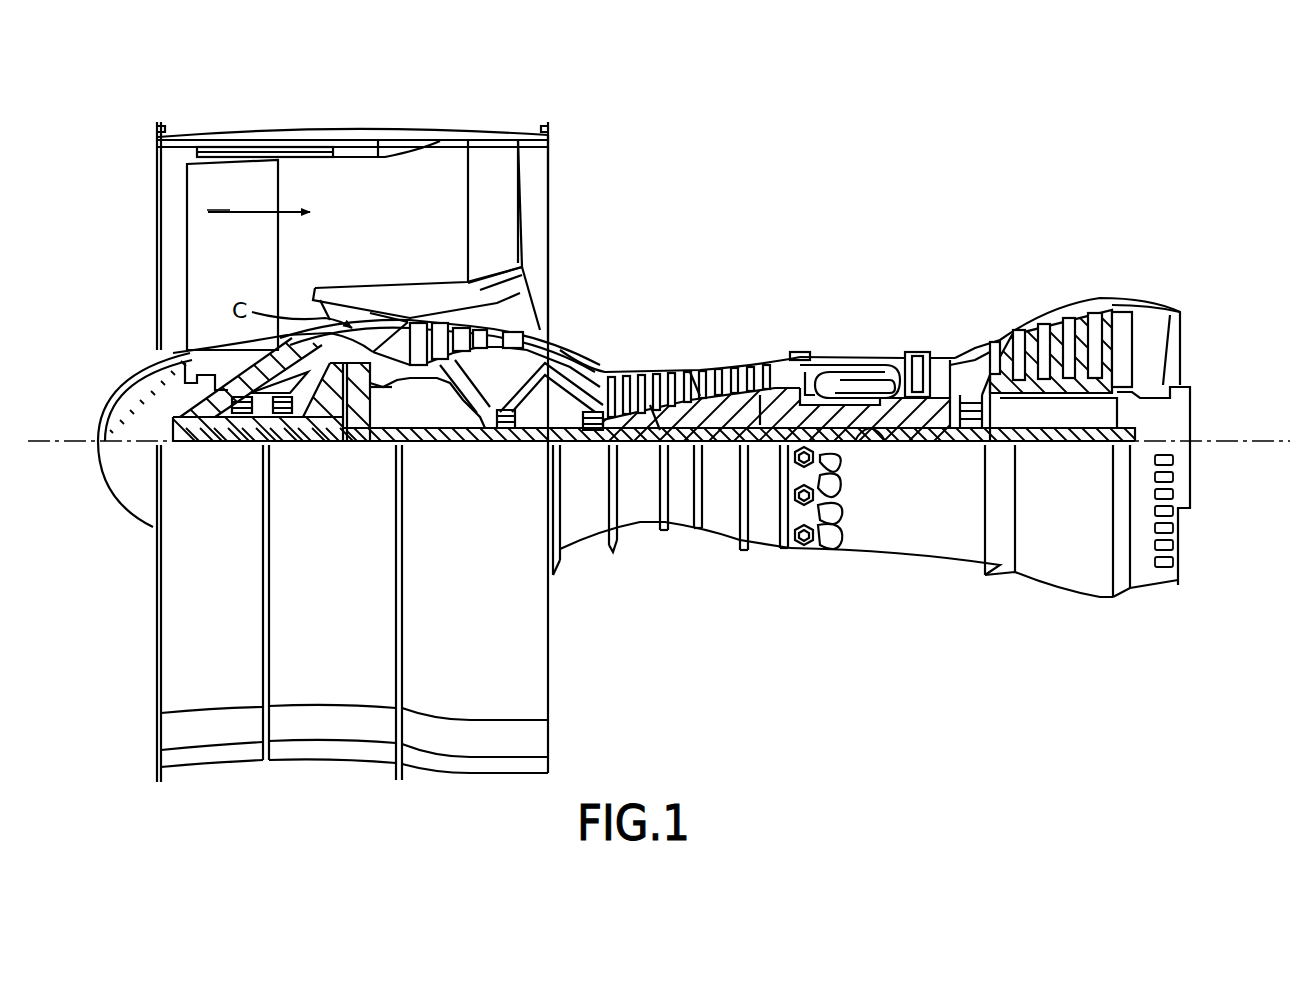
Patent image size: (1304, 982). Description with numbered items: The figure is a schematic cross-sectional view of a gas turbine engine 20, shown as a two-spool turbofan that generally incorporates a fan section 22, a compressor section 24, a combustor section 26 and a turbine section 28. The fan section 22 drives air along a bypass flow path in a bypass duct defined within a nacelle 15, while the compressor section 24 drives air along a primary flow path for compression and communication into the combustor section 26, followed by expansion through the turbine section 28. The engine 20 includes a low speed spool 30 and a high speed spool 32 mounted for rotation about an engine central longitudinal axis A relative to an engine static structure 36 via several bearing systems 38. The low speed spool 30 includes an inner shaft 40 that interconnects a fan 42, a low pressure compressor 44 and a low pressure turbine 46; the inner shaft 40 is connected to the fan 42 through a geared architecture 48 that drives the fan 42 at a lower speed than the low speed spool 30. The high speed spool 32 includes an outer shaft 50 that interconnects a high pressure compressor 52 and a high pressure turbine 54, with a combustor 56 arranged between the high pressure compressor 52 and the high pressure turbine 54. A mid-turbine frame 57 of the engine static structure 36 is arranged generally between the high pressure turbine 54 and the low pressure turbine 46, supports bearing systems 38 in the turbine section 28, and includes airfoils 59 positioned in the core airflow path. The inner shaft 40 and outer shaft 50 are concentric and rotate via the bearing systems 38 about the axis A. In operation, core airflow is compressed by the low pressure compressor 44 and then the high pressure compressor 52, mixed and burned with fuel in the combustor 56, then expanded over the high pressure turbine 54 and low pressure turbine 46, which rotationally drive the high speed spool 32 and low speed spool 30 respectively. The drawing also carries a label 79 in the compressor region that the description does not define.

The nacelle 15 is at (355, 137).
The gas turbine engine 20 is at (882, 155).
The fan section 22 is at (278, 118).
The compressor section 24 is at (600, 352).
The combustor section 26 is at (848, 335).
The turbine section 28 is at (1005, 297).
The low speed spool 30 is at (718, 452).
The high speed spool 32 is at (762, 410).
The engine static structure 36 is at (760, 548).
The bearing systems 38 is at (504, 432).
The inner shaft 40 is at (578, 445).
The fan 42 is at (244, 271).
The low pressure compressor 44 is at (470, 347).
The low pressure turbine 46 is at (1052, 332).
The geared architecture 48 is at (357, 420).
The outer shaft 50 is at (870, 441).
The high pressure compressor 52 is at (690, 410).
The high pressure turbine 54 is at (910, 358).
The combustor 56 is at (848, 385).
The mid-turbine frame 57 is at (968, 335).
The airfoils 59 is at (960, 372).
The compressor stage 79 is at (700, 372).
The engine central longitudinal axis A is at (1258, 441).